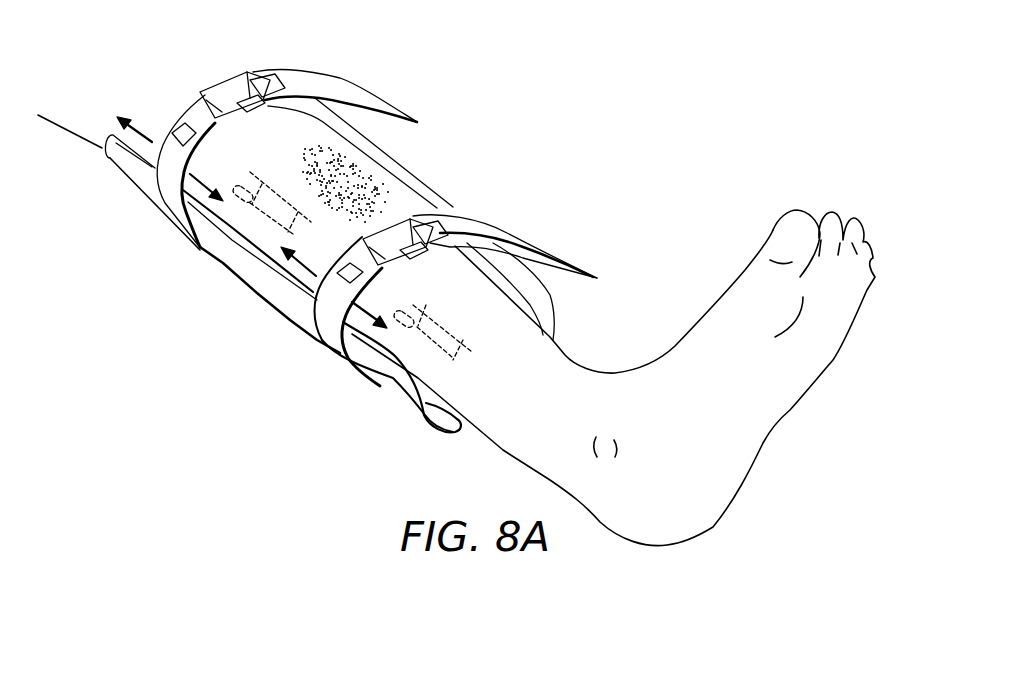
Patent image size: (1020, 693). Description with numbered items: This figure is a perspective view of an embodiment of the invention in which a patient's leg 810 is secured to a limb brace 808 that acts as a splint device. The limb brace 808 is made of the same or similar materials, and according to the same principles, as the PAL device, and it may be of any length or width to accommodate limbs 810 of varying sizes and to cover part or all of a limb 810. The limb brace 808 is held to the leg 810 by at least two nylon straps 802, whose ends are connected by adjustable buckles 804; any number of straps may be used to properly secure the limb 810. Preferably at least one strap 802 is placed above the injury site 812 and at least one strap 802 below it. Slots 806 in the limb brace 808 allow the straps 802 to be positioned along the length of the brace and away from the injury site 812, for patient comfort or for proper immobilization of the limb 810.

The strap 802 is at (193, 112).
The buckle 804 is at (232, 85).
The slot 806 is at (283, 229).
The limb brace 808 is at (134, 173).
The leg 810 is at (490, 428).
The injury site 812 is at (350, 162).